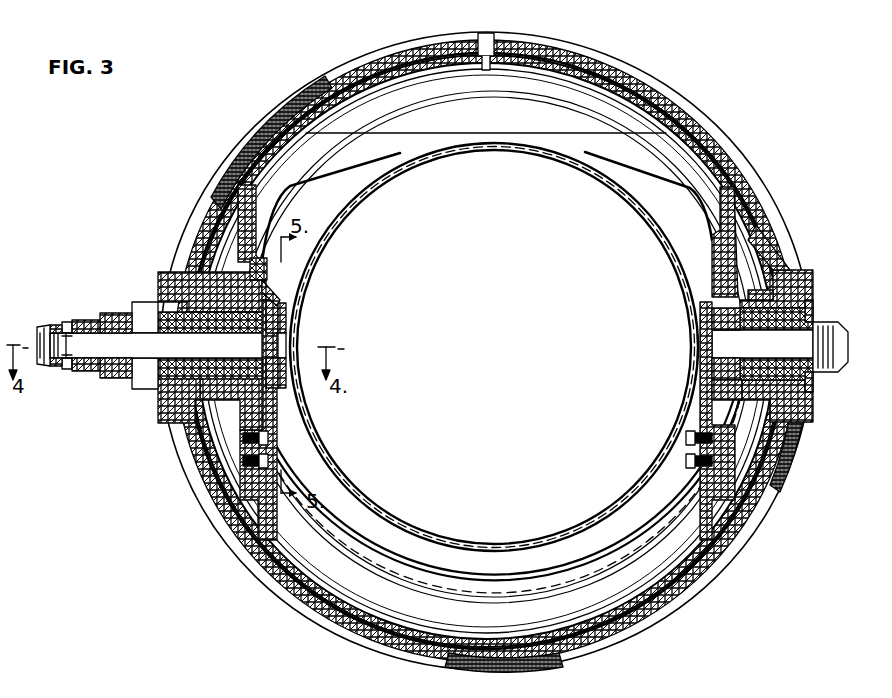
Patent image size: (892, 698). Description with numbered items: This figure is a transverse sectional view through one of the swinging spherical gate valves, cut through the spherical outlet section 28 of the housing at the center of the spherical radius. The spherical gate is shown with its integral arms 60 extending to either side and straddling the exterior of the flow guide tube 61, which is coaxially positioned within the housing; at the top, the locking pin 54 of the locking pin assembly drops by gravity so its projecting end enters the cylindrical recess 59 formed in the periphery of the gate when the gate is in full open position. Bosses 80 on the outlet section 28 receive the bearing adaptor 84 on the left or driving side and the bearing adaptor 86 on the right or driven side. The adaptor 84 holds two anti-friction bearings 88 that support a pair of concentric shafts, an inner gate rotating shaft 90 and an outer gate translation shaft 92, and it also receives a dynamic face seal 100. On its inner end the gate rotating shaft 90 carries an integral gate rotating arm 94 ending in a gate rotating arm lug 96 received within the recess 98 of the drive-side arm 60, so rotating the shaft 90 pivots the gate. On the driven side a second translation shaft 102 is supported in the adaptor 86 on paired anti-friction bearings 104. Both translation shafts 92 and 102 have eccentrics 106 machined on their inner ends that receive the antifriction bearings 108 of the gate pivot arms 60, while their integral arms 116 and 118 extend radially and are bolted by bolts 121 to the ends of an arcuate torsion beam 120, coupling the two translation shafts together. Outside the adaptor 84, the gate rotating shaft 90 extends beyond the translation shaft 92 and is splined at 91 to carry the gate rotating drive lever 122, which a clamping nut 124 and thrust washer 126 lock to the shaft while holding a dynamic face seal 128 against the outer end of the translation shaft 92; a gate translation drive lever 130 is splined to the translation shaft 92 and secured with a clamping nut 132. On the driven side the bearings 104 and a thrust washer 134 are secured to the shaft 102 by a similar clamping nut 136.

The outlet section 28 is at (612, 68).
The locking pin 54 is at (487, 33).
The cylindrical recess 59 is at (459, 67).
The integral arms 60 is at (249, 204).
The flow guide tube 61 is at (397, 527).
The bosses 80 is at (178, 270).
The bearing adaptor 84 is at (168, 403).
The bearing adaptor 86 is at (772, 398).
The anti-friction bearings 88 is at (214, 390).
The gate rotating shaft 90 is at (158, 346).
The splined end 91 is at (70, 372).
The gate translation shaft 92 is at (287, 337).
The gate rotating arm 94 is at (282, 291).
The gate rotating arm lug 96 is at (270, 263).
The recess 98 is at (287, 312).
The dynamic face seal 100 is at (150, 307).
The translation shaft 102 is at (786, 348).
The anti-friction bearings 104 is at (810, 303).
The eccentrics 106 is at (723, 325).
The antifriction bearings 108 is at (265, 388).
The integral arm 116 is at (252, 424).
The integral arm 118 is at (706, 378).
The arcuate torsion beam 120 is at (395, 592).
The bolts 121 is at (275, 443).
The gate rotating drive lever 122 is at (62, 322).
The clamping nut 124 is at (44, 372).
The thrust washer 126 is at (40, 327).
The dynamic face seal 128 is at (76, 376).
The gate translation drive lever 130 is at (112, 313).
The clamping nut 132 is at (85, 322).
The thrust washer 134 is at (820, 386).
The clamping nut 136 is at (840, 327).